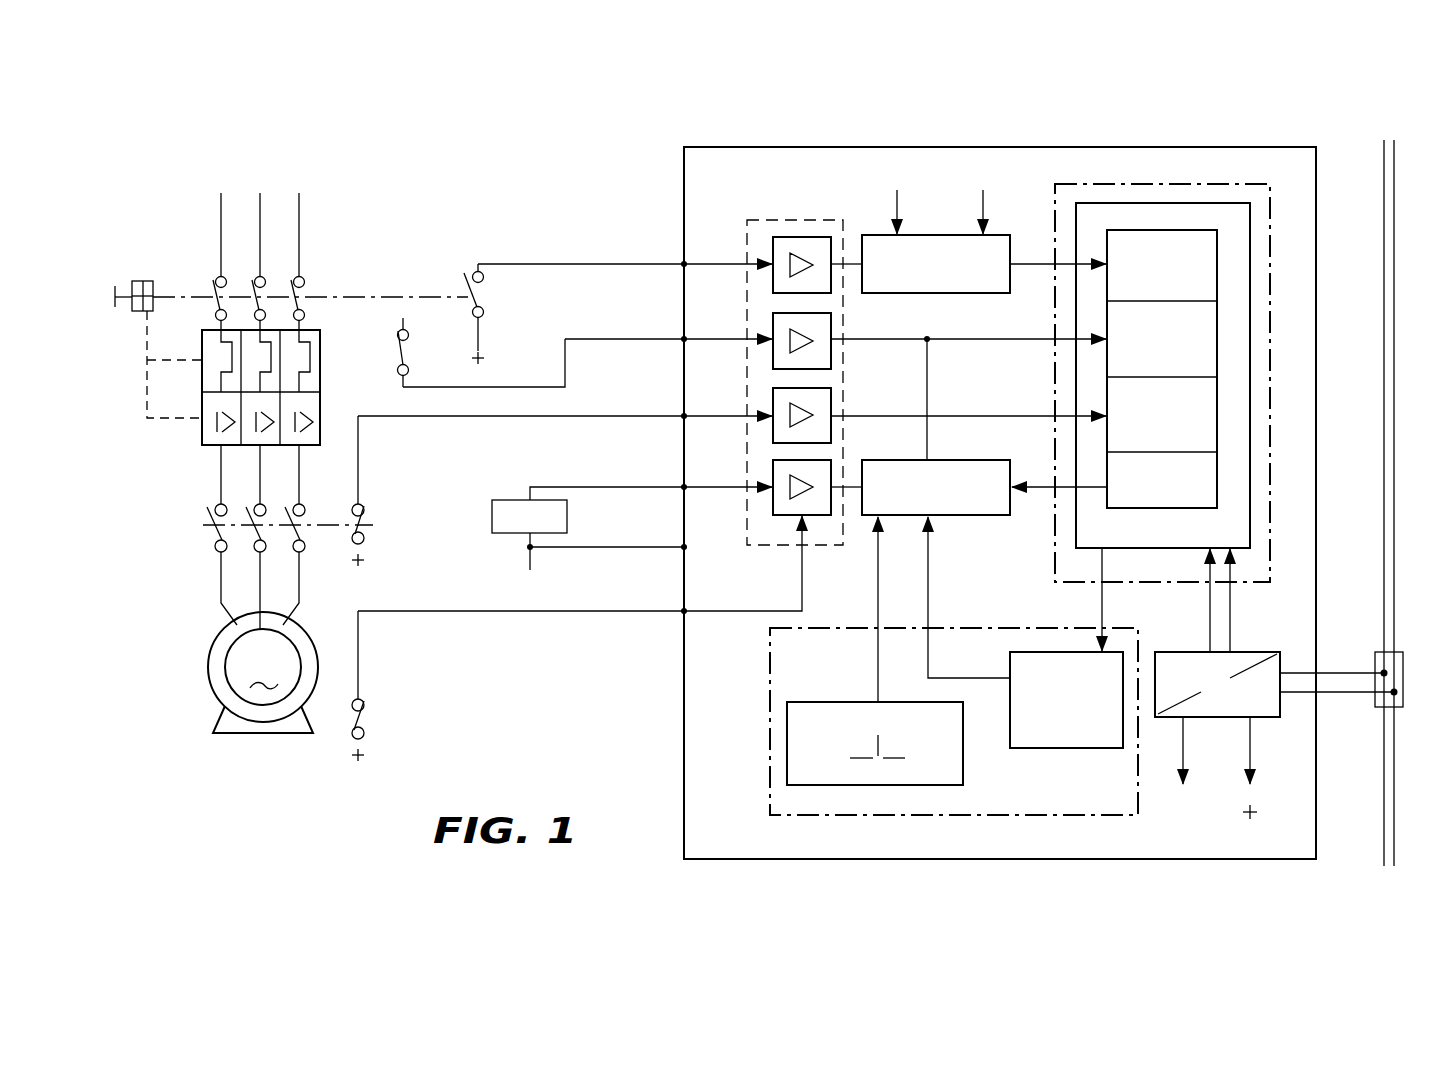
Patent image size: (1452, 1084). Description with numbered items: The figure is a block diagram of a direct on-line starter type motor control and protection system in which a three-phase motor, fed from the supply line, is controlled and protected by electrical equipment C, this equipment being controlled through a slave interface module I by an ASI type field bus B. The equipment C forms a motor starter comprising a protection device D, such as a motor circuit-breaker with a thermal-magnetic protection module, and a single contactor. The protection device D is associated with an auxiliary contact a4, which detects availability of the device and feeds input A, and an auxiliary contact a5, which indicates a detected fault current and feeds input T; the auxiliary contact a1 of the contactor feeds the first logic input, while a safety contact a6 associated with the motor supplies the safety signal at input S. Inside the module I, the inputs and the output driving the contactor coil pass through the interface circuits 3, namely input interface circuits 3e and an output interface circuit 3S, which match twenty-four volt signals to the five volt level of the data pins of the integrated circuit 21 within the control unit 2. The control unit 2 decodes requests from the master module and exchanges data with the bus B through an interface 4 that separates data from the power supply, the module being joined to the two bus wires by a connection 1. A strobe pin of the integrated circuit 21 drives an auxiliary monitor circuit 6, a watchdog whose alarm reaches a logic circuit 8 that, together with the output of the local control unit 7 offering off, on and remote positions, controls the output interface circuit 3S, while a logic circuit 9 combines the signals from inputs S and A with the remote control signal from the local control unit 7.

The connection 1 is at (1405, 681).
The control unit 2 is at (1182, 184).
The integrated circuit 21 is at (1250, 228).
The interface circuits 3 is at (794, 224).
The input interface circuit 3e is at (824, 282).
The output interface circuit 3S is at (824, 466).
The interface 4 is at (1270, 719).
The auxiliary monitor circuit 6 is at (1066, 750).
The local control unit 7 is at (835, 700).
The logic circuit 8 is at (980, 517).
The logic circuit 9 is at (1010, 278).
The interface module I is at (1070, 146).
The field bus B is at (1404, 298).
The electrical motor control and protection equipment C is at (358, 220).
The protection device D is at (144, 357).
The auxiliary contact a1 is at (371, 512).
The auxiliary contact a4 is at (490, 297).
The auxiliary contact a5 is at (397, 340).
The safety contact a6 is at (371, 707).